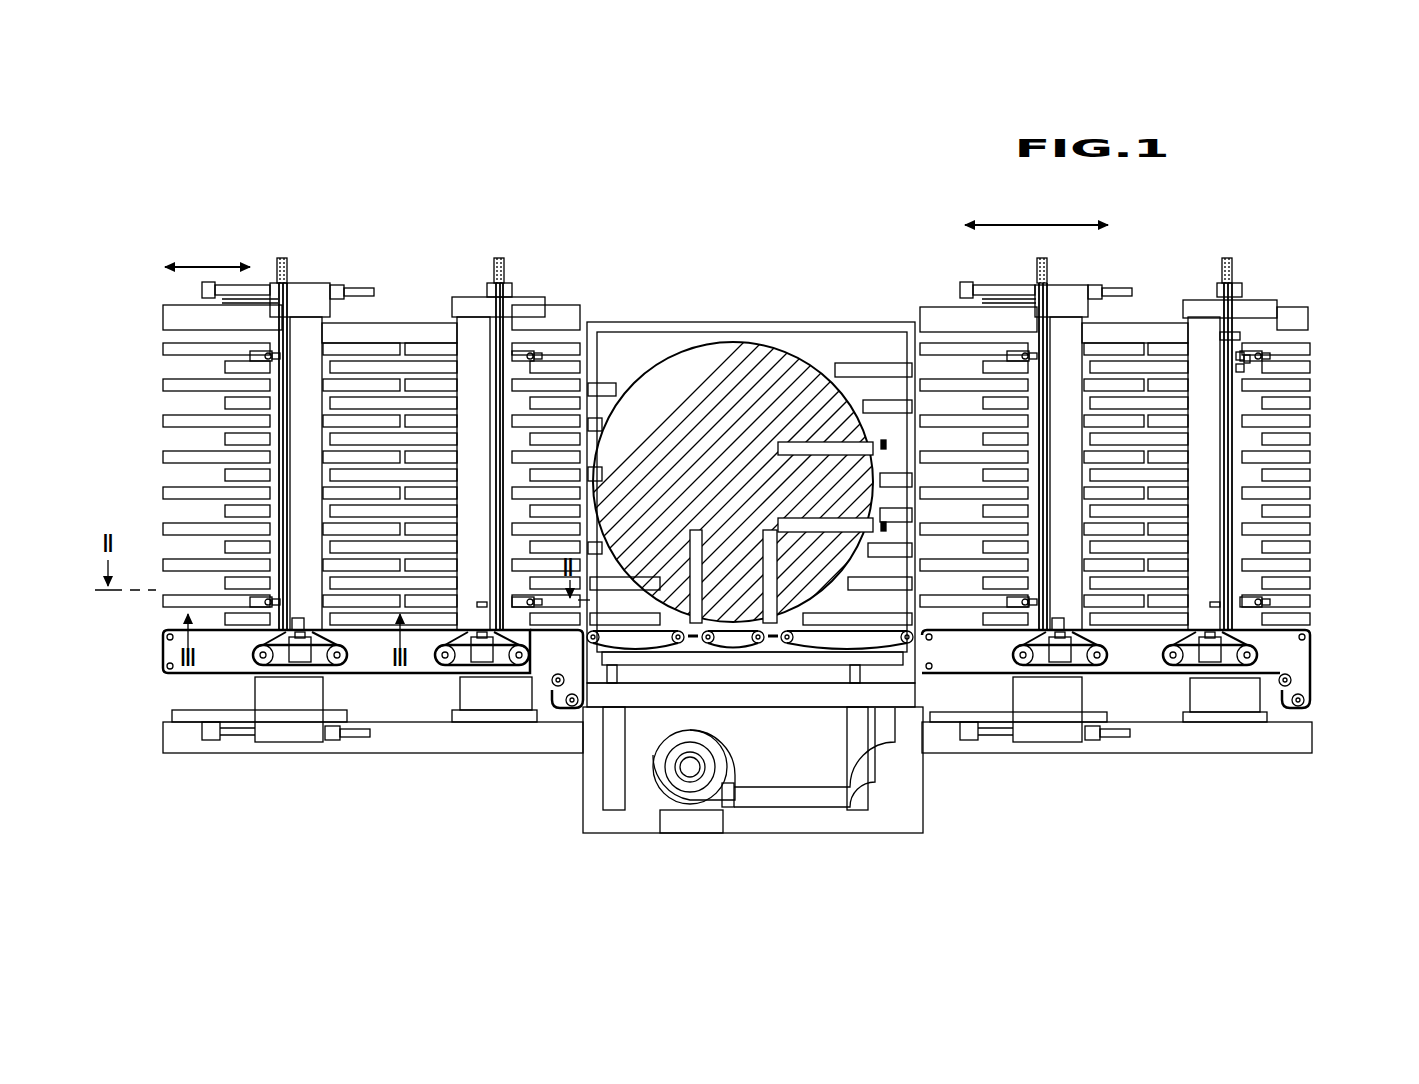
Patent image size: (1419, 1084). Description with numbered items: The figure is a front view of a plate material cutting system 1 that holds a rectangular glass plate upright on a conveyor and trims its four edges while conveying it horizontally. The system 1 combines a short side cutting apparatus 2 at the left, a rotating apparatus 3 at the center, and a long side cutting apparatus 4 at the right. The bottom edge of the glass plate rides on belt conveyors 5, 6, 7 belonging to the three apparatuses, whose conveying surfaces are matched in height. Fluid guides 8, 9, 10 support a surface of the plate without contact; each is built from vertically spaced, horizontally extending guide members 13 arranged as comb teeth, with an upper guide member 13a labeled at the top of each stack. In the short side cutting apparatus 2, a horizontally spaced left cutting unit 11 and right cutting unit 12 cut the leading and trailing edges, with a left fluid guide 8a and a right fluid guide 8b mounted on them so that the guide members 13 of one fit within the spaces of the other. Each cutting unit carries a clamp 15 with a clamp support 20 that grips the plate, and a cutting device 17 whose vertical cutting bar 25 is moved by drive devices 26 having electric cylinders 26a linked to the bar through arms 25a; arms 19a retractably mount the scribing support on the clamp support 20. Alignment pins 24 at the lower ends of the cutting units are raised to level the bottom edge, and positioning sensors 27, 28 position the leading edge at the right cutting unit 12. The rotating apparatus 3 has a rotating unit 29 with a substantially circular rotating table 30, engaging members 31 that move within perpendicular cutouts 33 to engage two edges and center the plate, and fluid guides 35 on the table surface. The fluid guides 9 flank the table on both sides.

The plate material cutting system 1 is at (780, 163).
The short side cutting apparatus 2 is at (407, 848).
The rotating apparatus 3 is at (755, 840).
The long side cutting apparatus 4 is at (1150, 864).
The belt conveyor 5 is at (165, 678).
The belt conveyor 6 is at (650, 655).
The belt conveyor 7 is at (950, 678).
The fluid guide 8 is at (350, 388).
The left fluid guide 8a is at (375, 345).
The right fluid guide 8b is at (430, 345).
The fluid guide 9 is at (838, 368).
The fluid guide 10 is at (1122, 352).
The left cutting unit 11 is at (312, 594).
The right cutting unit 12 is at (488, 440).
The guide member 13 is at (165, 388).
The top plate 13a is at (212, 368).
The clamp 15 is at (295, 744).
The cutting device 17 is at (1316, 392).
The arm 19a is at (502, 270).
The clamp support 20 is at (290, 600).
The alignment pin 24 is at (433, 612).
The cutting bar 25 is at (1240, 337).
The arm 25a is at (1240, 366).
The drive device 26 is at (1250, 357).
The electric cylinder 26a is at (1248, 360).
The positioning sensor 27 is at (300, 632).
The positioning sensor 28 is at (486, 600).
The rotating unit 29 is at (787, 447).
The rotating table 30 is at (707, 350).
The engaging member 31 is at (883, 440).
The cutout 33 is at (805, 352).
The fluid guide 35 is at (667, 380).